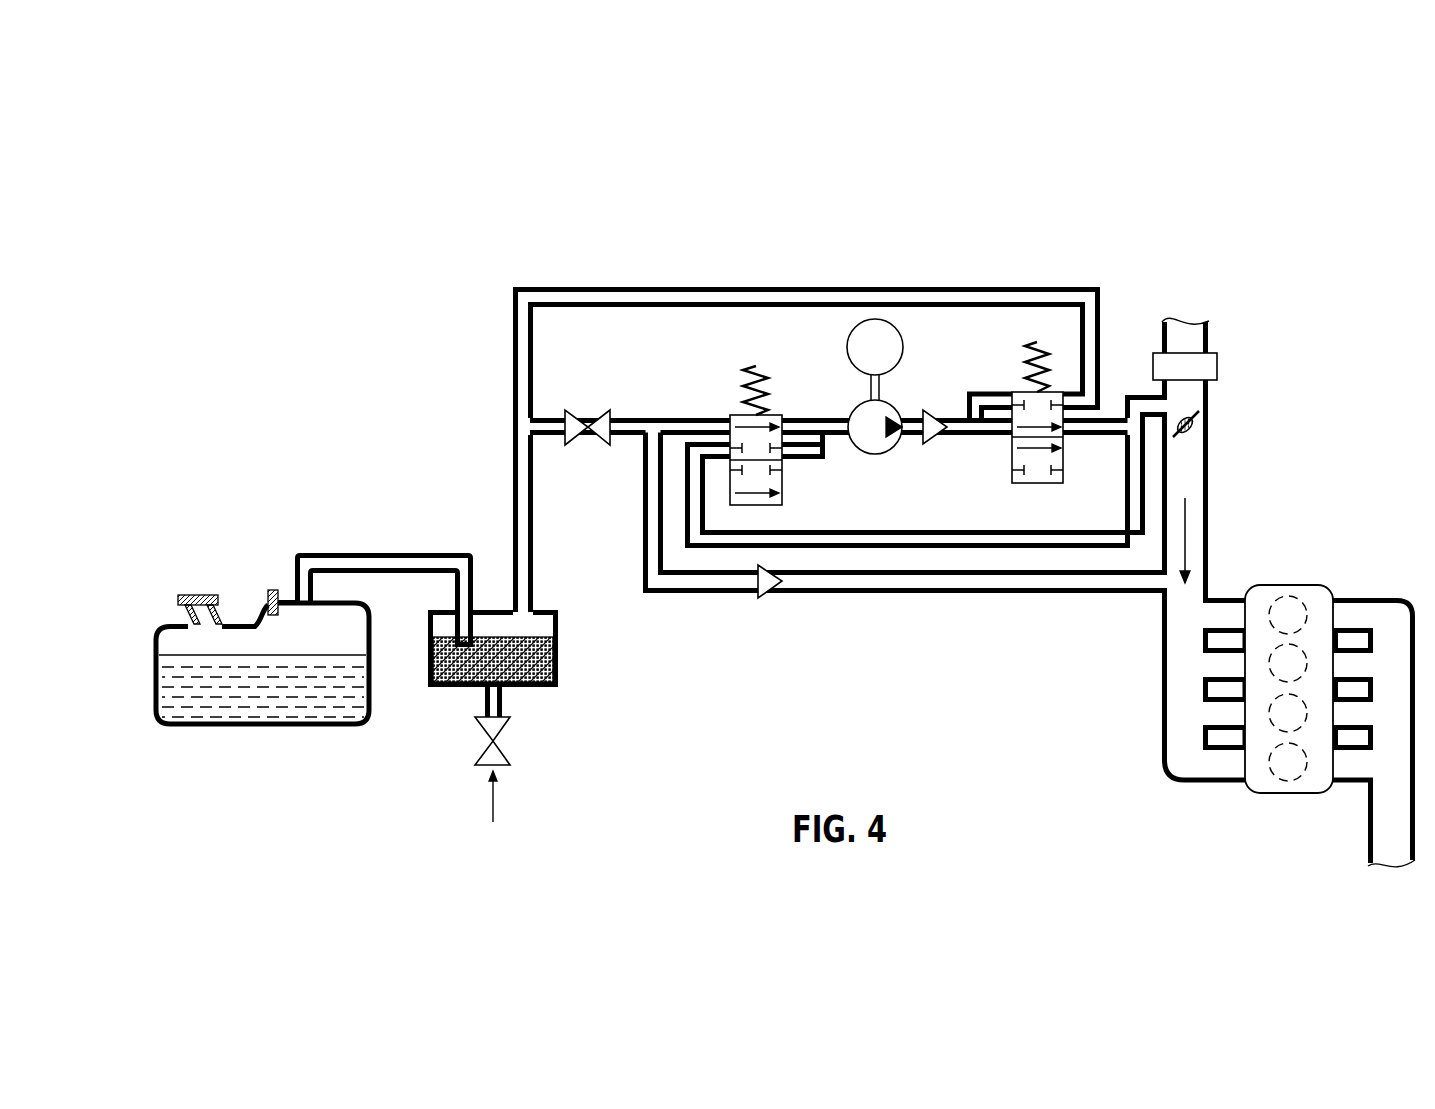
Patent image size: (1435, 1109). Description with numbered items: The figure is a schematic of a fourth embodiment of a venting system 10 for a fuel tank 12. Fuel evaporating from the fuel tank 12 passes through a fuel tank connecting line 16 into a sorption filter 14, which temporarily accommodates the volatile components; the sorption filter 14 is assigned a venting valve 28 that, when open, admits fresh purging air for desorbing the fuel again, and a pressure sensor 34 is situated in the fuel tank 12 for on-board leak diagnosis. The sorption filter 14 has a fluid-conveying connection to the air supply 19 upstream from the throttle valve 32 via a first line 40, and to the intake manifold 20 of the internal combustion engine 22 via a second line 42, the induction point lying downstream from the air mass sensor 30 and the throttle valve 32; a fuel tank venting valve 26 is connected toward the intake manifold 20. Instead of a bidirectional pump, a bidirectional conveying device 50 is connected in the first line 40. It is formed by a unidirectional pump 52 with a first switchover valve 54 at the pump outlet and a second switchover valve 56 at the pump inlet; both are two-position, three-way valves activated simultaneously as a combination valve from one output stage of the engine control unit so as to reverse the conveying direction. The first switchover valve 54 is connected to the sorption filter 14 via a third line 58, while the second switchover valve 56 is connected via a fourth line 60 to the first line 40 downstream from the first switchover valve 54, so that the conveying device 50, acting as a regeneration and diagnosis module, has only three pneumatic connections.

The venting system 10 is at (344, 347).
The fuel tank 12 is at (260, 727).
The sorption filter 14 is at (558, 656).
The fuel tank connecting line 16 is at (372, 553).
The air supply 19 is at (1190, 397).
The intake manifold 20 is at (1209, 493).
The internal combustion engine 22 is at (1318, 605).
The fuel tank venting valve 26 is at (577, 440).
The venting valve 28 is at (508, 740).
The air mass sensor 30 is at (1200, 365).
The throttle valve 32 is at (1197, 428).
The pressure sensor 34 is at (268, 598).
The first line 40 is at (1133, 400).
The second line 42 is at (1082, 592).
The bidirectional conveying device 50 is at (639, 254).
The unidirectional pump 52 is at (904, 345).
The first switchover valve 54 is at (1022, 458).
The second switchover valve 56 is at (790, 482).
The third line 58 is at (800, 286).
The fourth line 60 is at (900, 530).